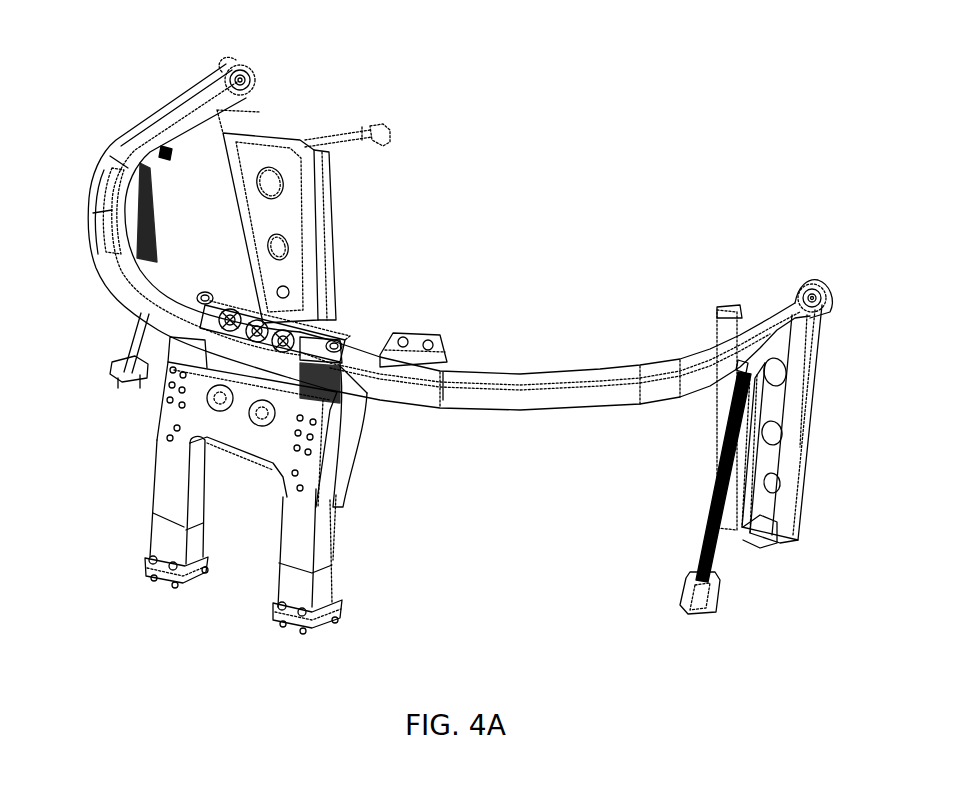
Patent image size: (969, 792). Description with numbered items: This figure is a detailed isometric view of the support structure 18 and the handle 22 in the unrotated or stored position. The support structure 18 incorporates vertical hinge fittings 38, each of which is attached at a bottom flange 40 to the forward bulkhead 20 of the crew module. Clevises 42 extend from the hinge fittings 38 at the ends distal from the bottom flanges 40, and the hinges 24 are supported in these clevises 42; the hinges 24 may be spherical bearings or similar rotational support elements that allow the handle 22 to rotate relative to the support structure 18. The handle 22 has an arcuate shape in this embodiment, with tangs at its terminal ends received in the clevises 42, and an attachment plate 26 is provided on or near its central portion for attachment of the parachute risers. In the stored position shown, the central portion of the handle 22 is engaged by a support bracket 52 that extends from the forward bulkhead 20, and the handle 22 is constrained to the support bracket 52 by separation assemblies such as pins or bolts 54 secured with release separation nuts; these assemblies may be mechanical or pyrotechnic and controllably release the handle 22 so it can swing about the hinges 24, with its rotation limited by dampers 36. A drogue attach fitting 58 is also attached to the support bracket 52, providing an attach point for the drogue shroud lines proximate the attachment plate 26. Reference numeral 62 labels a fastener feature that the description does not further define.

The support structure 18 is at (300, 140).
The forward bulkhead 20 is at (515, 610).
The handle 22 is at (485, 409).
The hinges 24 is at (246, 76).
The attachment plate 26 is at (298, 312).
The dampers 36 is at (134, 327).
The vertical hinge fittings 38 is at (324, 253).
The bottom flange 40 is at (754, 538).
The clevises 42 is at (247, 88).
The support bracket 52 is at (190, 526).
The pins or bolts 54 is at (206, 293).
The drogue attach fitting 58 is at (235, 420).
The bolt 62 is at (168, 158).